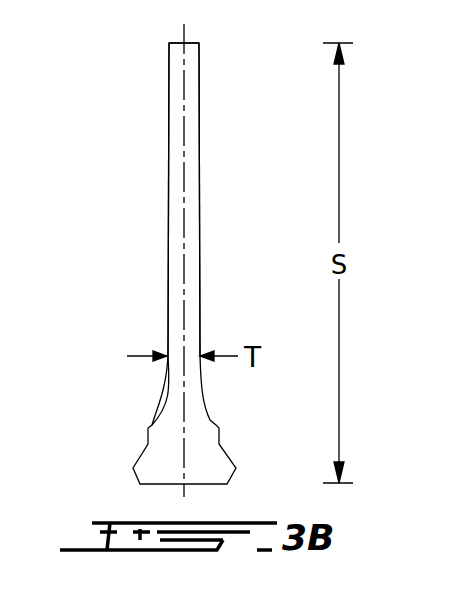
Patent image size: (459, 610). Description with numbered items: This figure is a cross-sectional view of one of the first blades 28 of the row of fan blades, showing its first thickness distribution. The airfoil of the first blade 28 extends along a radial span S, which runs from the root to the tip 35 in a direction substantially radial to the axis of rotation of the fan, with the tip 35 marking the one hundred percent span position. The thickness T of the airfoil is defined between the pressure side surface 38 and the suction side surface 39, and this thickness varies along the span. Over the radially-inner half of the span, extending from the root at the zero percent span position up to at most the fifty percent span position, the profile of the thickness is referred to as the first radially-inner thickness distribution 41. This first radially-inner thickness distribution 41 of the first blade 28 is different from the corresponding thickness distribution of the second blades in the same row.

The first blade 28 is at (114, 112).
The tip 35 is at (186, 43).
The pressure side surface 38 is at (200, 240).
The suction side surface 39 is at (168, 239).
The first radially-inner thickness distribution 41 is at (115, 270).